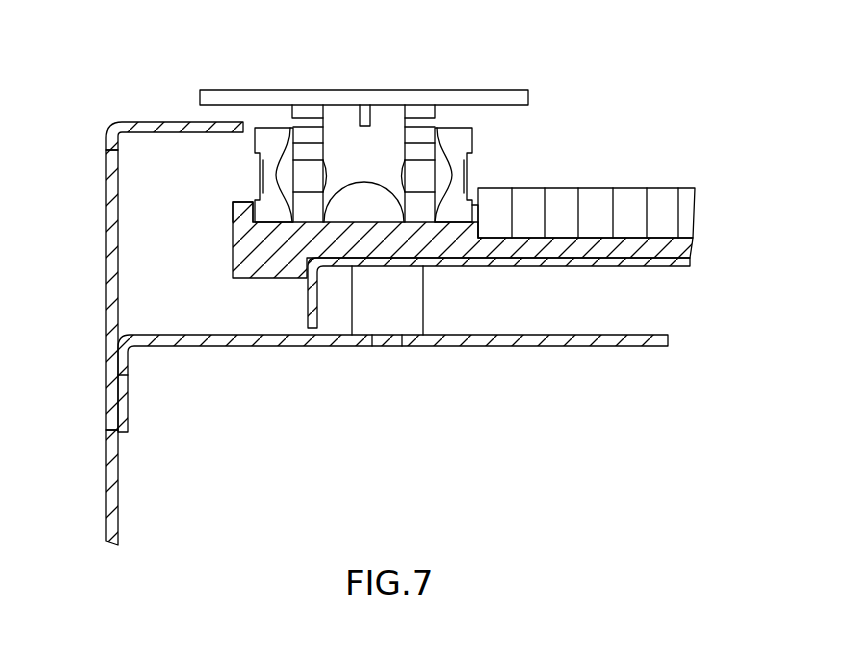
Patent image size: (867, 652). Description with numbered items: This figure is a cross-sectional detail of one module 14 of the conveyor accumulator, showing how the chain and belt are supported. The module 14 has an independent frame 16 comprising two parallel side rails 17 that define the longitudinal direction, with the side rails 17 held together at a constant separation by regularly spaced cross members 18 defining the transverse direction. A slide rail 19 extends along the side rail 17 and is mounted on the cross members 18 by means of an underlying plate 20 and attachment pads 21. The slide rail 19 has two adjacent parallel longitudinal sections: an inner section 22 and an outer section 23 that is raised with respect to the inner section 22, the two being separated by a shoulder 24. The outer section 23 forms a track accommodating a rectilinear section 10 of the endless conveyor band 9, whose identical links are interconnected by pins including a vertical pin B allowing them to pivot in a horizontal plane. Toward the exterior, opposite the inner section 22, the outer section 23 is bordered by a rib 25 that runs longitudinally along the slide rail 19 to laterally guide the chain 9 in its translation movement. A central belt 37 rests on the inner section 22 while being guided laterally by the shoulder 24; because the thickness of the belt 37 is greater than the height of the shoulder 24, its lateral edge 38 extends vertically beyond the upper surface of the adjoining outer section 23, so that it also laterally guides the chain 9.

The module 14 is at (112, 92).
The frame 16 is at (100, 462).
The side rail 17 is at (112, 297).
The cross member 18 is at (575, 341).
The slide rail 19 is at (225, 261).
The underlying plate 20 is at (630, 264).
The attachment pad 21 is at (402, 307).
The inner section 22 is at (658, 228).
The outer section 23 is at (350, 208).
The shoulder 24 is at (479, 232).
The rib 25 is at (247, 203).
The central belt 37 is at (594, 200).
The lateral edge 38 is at (468, 220).
The endless conveyor band 9 is at (466, 83).
The rectilinear section 10 is at (363, 174).
The vertical pin B is at (385, 124).